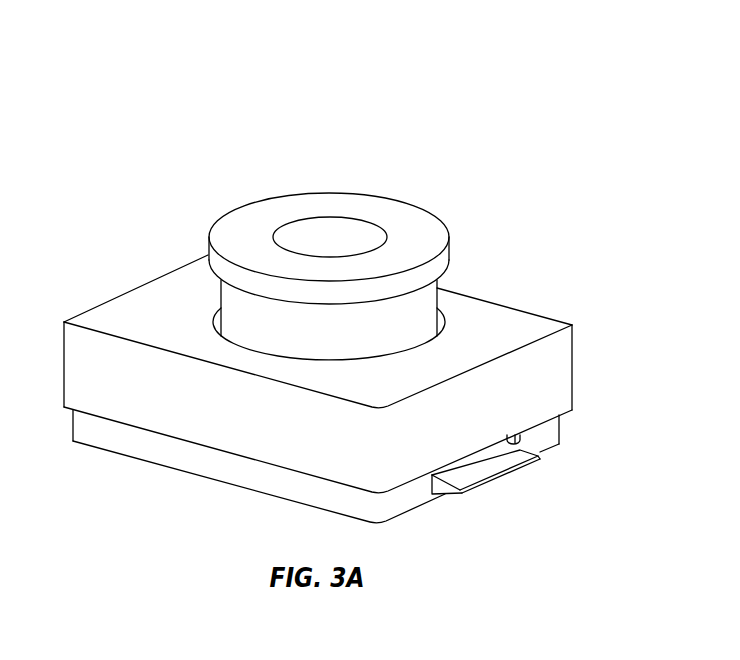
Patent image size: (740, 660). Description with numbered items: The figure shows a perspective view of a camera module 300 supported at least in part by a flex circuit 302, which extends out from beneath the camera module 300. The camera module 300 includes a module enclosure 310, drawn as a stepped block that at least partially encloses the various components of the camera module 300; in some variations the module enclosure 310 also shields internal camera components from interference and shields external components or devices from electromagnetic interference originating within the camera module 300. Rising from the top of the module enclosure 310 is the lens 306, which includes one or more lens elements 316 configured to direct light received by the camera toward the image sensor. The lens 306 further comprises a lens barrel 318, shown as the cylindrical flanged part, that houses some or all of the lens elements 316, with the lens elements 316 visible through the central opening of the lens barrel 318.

The camera module 300 is at (113, 104).
The flex circuit 302 is at (506, 478).
The lens 306 is at (329, 239).
The module enclosure 310 is at (573, 367).
The lens elements 316 is at (357, 219).
The lens barrel 318 is at (412, 204).